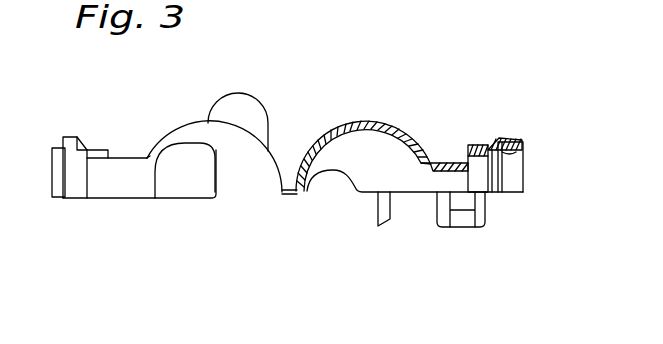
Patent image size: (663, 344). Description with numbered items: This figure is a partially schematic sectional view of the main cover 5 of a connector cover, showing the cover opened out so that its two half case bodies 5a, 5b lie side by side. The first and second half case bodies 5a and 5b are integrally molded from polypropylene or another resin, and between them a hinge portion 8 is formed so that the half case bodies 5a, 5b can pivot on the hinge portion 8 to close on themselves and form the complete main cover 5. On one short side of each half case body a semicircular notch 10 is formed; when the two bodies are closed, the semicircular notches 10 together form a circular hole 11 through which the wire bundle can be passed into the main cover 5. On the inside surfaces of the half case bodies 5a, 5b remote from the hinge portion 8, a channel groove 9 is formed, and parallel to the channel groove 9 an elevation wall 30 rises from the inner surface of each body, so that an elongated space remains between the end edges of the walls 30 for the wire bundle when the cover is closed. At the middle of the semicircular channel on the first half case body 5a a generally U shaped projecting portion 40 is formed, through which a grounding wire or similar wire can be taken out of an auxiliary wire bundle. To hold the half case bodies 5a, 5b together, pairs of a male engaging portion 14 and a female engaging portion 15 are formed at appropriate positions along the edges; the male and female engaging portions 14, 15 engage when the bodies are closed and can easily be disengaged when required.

The main cover 5 is at (373, 125).
The first half case body 5a is at (155, 158).
The second half case body 5b is at (360, 121).
The hinge portion 8 is at (290, 197).
The channel groove 9 is at (505, 152).
The semicircular notch 10 is at (175, 181).
The circular hole 11 is at (230, 177).
The male engaging portion 14 is at (378, 212).
The female engaging portion 15 is at (105, 184).
The elevation wall 30 is at (486, 148).
The U shaped projecting portion 40 is at (227, 93).